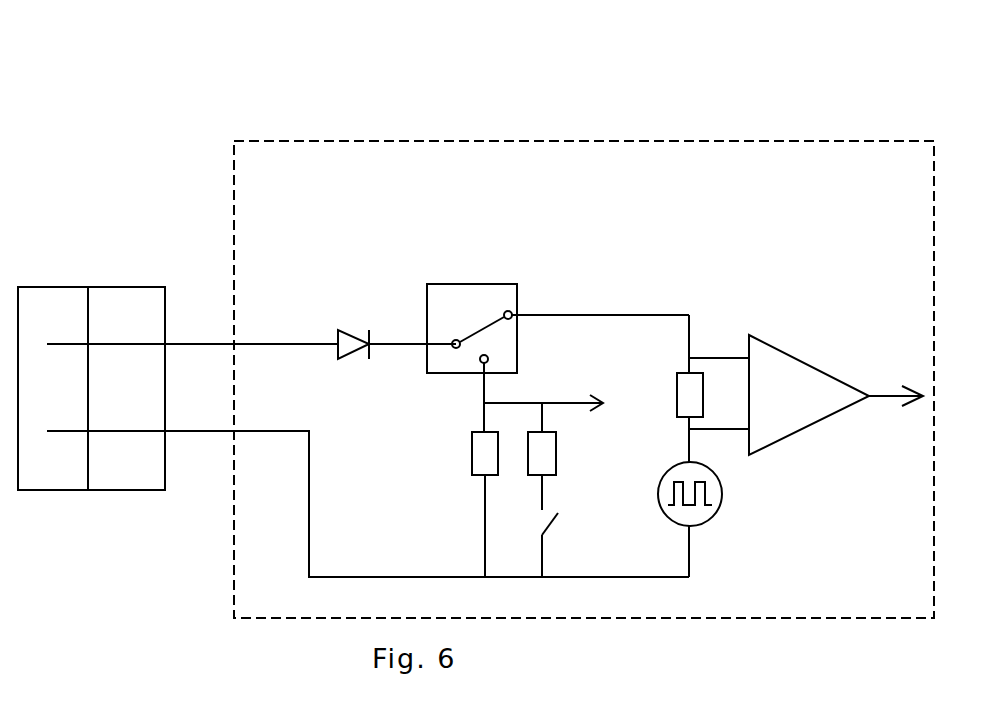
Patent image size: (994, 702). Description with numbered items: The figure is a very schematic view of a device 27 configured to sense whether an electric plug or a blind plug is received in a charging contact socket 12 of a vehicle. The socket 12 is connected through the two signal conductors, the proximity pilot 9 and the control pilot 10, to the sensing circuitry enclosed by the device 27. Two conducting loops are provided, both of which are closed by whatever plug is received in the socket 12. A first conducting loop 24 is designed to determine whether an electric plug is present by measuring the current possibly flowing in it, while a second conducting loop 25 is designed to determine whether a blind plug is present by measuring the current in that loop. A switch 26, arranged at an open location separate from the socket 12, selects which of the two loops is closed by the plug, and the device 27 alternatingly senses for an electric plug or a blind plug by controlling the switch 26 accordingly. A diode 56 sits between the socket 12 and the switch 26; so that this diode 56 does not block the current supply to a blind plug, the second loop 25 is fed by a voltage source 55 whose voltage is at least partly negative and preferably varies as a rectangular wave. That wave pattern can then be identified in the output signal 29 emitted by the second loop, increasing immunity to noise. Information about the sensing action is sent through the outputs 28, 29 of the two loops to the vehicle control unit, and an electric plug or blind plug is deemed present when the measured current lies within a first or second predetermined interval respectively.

The proximity pilot signal conductor 9 is at (198, 343).
The control pilot signal conductor 10 is at (211, 433).
The charging contact socket 12 is at (107, 285).
The first conducting loop 24 is at (483, 388).
The second conducting loop 25 is at (604, 315).
The switch 26 is at (457, 284).
The sensing device 27 is at (337, 139).
The output of first loop 28 is at (573, 401).
The output signal of second loop 29 is at (894, 393).
The voltage source 55 is at (725, 495).
The diode 56 is at (355, 353).